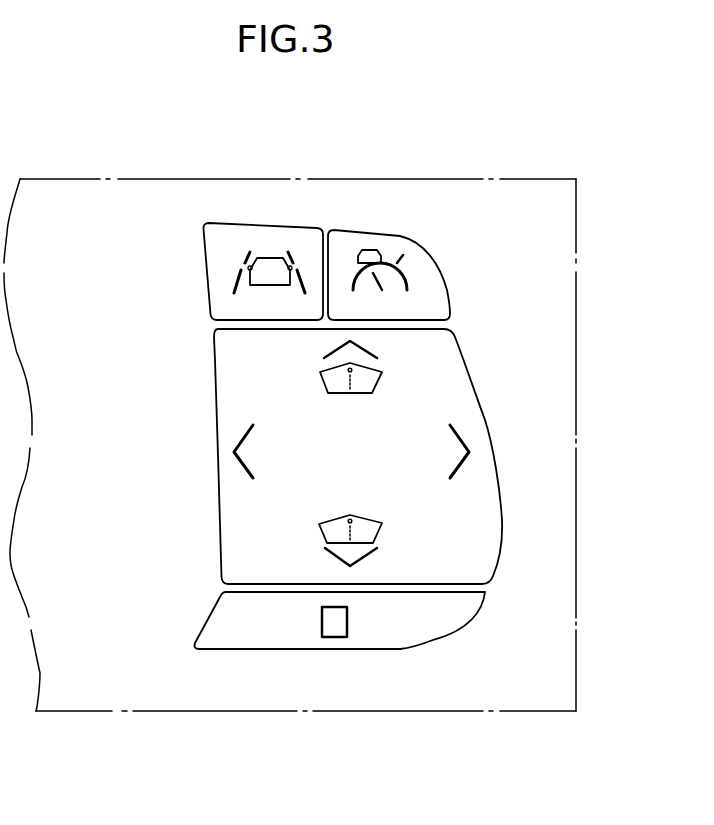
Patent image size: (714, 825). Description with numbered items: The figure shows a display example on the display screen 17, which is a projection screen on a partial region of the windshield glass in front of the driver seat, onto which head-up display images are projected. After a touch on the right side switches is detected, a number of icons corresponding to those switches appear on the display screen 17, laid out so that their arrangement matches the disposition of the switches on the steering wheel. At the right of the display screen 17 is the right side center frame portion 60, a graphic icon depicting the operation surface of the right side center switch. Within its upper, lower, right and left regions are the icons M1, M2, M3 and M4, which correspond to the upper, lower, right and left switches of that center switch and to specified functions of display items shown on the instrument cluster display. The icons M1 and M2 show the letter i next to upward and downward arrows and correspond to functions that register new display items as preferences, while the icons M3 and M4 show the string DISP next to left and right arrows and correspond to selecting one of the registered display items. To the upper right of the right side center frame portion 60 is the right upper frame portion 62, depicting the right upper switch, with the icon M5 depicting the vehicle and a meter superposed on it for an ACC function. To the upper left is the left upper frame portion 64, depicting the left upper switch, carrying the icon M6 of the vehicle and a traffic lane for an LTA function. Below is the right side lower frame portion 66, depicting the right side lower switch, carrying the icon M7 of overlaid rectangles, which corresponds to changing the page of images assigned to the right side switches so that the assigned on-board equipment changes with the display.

The display screen 17 is at (362, 179).
The right side center frame portion 60 is at (475, 389).
The right upper frame portion 62 is at (445, 282).
The left upper frame portion 64 is at (205, 293).
The right side lower frame portion 66 is at (265, 650).
The icon M1 is at (387, 363).
The icon M2 is at (382, 534).
The icon M3 is at (468, 435).
The icon M4 is at (233, 437).
The icon M5 is at (410, 265).
The icon M6 is at (236, 273).
The icon M7 is at (352, 623).